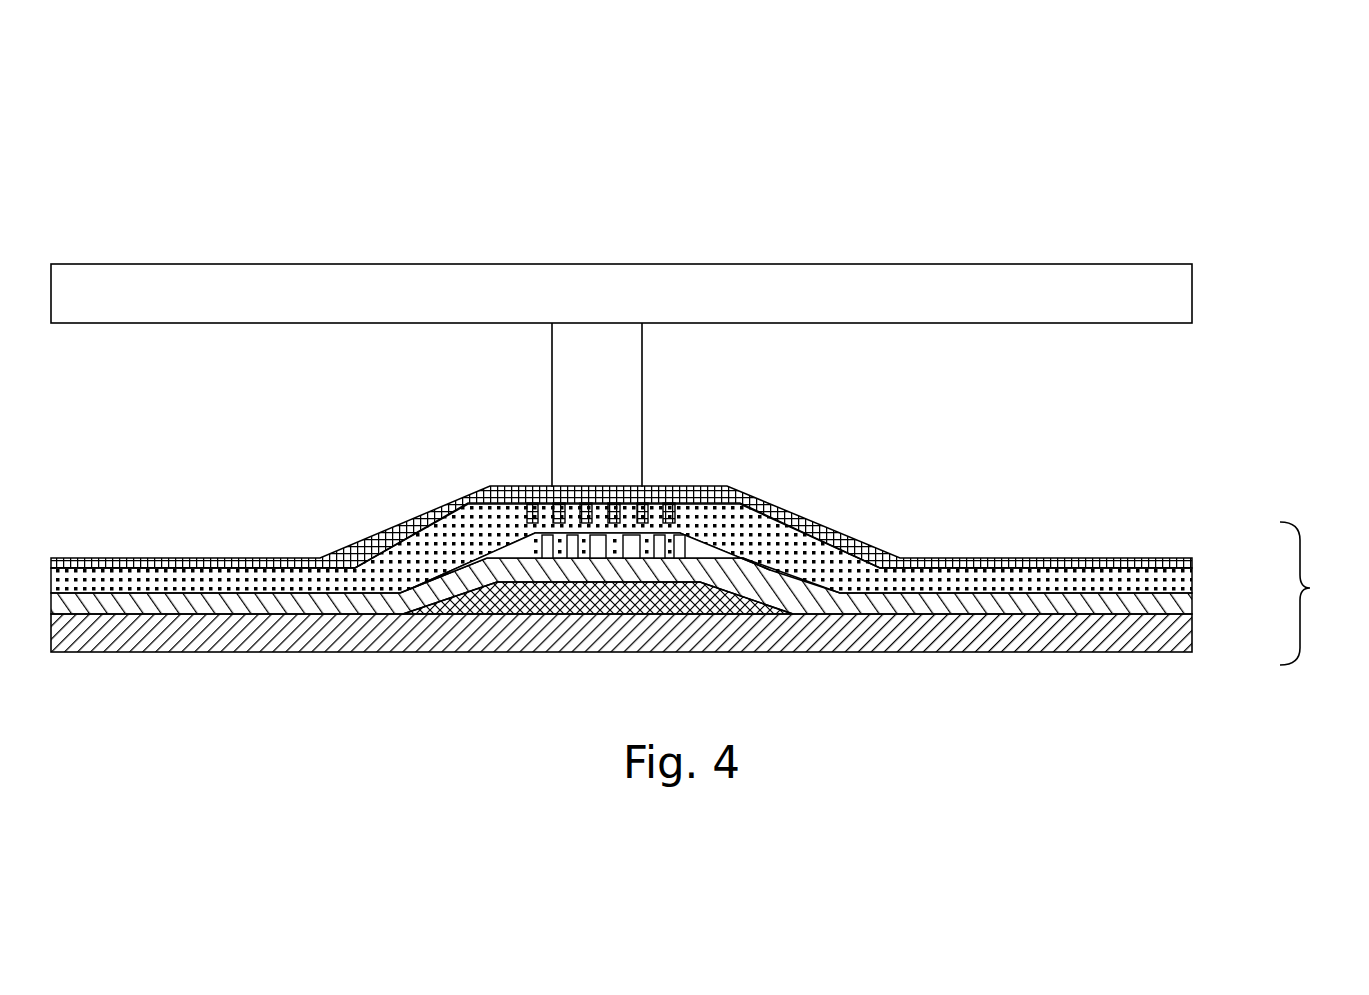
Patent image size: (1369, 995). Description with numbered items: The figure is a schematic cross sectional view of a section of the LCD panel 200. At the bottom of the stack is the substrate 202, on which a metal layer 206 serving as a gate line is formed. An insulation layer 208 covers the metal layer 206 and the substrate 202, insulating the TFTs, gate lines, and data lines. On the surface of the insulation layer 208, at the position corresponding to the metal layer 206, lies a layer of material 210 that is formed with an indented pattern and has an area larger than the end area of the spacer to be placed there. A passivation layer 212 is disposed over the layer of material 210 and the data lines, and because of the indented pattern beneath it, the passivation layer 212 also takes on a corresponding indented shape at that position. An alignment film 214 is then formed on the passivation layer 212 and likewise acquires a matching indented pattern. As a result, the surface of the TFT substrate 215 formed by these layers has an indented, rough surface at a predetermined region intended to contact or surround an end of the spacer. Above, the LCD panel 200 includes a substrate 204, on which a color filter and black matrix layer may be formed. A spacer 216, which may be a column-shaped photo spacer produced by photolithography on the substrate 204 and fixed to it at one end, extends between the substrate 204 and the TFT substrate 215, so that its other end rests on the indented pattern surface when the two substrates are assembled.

The LCD panel 200 is at (1120, 137).
The substrate 202 is at (1193, 641).
The substrate 204 is at (1186, 290).
The metal layer 206 is at (672, 608).
The insulation layer 208 is at (1193, 611).
The layer of material 210 is at (508, 550).
The passivation layer 212 is at (1193, 589).
The alignment film 214 is at (1193, 563).
The TFT substrate 215 is at (1310, 588).
The spacer 216 is at (628, 410).